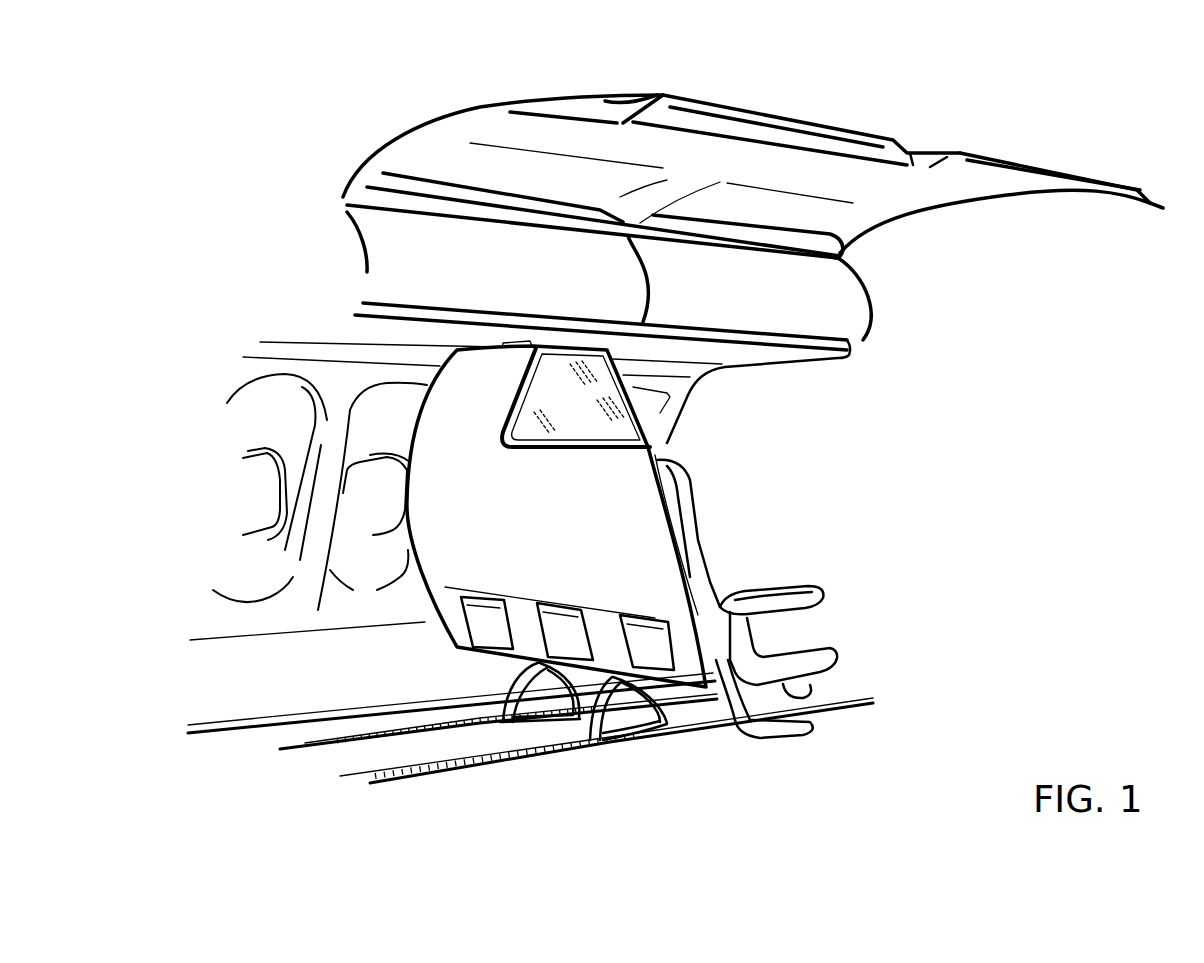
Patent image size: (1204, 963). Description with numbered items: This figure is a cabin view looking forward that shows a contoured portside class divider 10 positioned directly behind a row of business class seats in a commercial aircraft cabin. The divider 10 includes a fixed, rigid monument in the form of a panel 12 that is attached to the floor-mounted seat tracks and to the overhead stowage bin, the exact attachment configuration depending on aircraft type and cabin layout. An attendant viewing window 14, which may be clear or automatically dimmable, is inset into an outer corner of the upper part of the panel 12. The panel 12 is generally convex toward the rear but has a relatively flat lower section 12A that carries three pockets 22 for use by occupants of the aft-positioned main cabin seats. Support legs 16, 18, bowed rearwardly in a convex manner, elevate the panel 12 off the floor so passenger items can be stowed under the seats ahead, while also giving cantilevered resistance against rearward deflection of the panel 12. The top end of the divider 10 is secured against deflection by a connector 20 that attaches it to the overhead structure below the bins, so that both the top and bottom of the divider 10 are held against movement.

The contoured portside class divider 10 is at (398, 415).
The panel 12 is at (630, 505).
The lower section 12A is at (440, 651).
The attendant viewing window 14 is at (637, 392).
The support leg 16 is at (643, 737).
The support leg 18 is at (507, 687).
The connector 20 is at (520, 347).
The pockets 22 is at (643, 613).